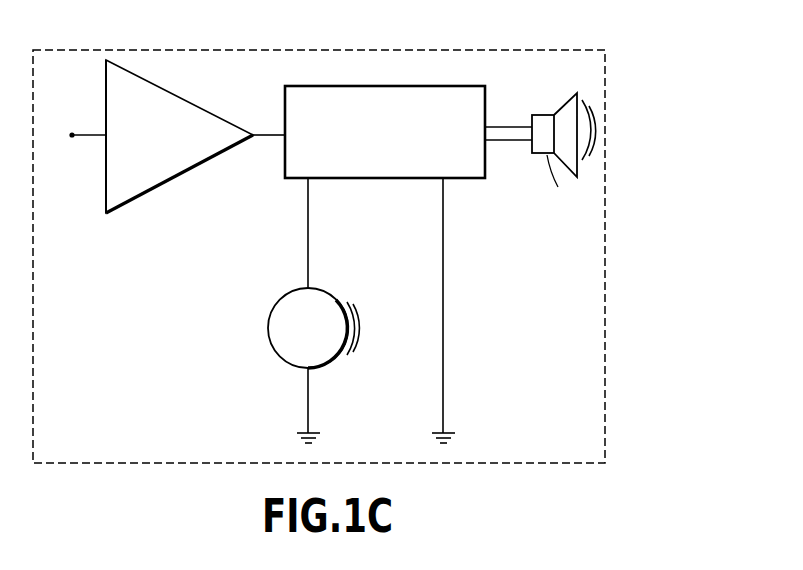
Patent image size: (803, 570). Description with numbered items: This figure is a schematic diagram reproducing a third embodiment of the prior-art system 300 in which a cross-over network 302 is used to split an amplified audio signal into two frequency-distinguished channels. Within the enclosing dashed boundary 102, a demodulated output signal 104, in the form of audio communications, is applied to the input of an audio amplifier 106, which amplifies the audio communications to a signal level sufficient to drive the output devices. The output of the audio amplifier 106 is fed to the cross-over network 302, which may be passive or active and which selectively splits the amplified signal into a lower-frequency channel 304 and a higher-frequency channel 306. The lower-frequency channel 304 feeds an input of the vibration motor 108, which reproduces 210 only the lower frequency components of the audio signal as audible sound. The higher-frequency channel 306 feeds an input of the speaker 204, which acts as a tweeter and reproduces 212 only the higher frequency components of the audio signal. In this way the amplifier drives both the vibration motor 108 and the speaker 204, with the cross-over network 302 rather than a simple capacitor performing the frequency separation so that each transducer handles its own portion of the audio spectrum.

The vehicle / enclosure 102 is at (606, 344).
The demodulated output signal 104 is at (70, 137).
The audio amplifier 106 is at (200, 105).
The vibration motor 108 is at (328, 290).
The speaker 204 is at (558, 112).
The reproduction of lower frequency components 210 is at (365, 330).
The reproduction of higher frequency components 212 is at (595, 130).
The audio system 300 is at (600, 41).
The cross-over network 302 is at (463, 180).
The lower-frequency channel 304 is at (309, 240).
The higher-frequency channel 306 is at (503, 141).